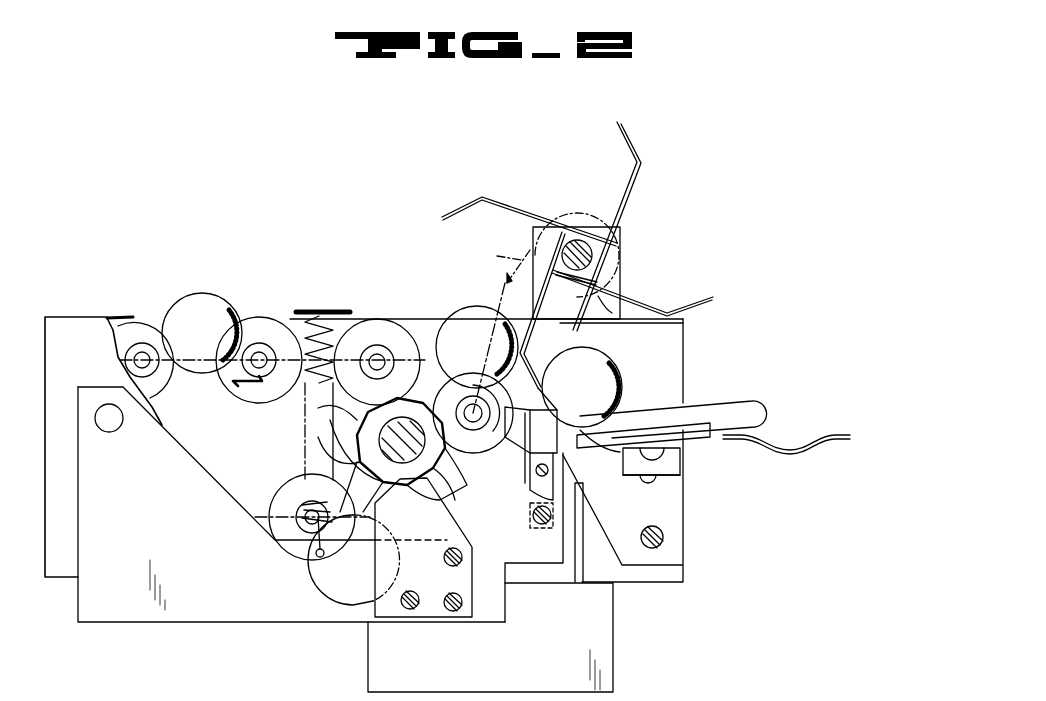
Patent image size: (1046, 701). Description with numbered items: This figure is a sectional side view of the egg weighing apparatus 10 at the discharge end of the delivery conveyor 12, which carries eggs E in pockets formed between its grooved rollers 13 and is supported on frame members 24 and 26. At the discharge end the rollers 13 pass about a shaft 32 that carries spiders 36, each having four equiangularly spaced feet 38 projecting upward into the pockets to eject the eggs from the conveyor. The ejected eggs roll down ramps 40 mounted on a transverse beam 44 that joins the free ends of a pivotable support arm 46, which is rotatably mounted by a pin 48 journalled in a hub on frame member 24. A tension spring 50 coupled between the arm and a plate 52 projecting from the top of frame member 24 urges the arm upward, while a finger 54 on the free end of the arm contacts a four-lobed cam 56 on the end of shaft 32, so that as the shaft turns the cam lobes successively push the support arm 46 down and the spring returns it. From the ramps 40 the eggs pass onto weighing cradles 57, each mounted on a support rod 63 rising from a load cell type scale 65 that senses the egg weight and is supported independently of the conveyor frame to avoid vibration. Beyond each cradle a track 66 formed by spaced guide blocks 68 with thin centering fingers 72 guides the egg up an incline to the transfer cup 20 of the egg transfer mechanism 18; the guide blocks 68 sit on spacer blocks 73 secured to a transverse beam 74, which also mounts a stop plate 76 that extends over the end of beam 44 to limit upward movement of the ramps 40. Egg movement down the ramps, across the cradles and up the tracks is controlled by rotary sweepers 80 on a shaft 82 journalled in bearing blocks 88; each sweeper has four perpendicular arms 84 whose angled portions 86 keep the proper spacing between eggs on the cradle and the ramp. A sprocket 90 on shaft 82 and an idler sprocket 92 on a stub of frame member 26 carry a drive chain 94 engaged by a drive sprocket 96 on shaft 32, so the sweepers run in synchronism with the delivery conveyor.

The egg weighing apparatus 10 is at (624, 621).
The delivery conveyor 12 is at (140, 316).
The grooved rollers 13 is at (237, 397).
The egg transfer mechanism 18 is at (822, 434).
The transfer cup 20 is at (808, 452).
The frame member 24 is at (88, 368).
The frame member 26 is at (214, 431).
The shaft 32 is at (401, 420).
The spiders 36 is at (316, 410).
The feet 38 is at (320, 437).
The ramps 40 is at (550, 407).
The transverse beam 44 is at (530, 483).
The support arm 46 is at (232, 579).
The pin 48 is at (109, 432).
The tension spring 50 is at (343, 319).
The plate 52 is at (308, 310).
The finger 54 is at (428, 608).
The four-lobed cam 56 is at (402, 472).
The weighing cradles 57 is at (590, 460).
The support rods 63 is at (575, 548).
The scales 65 is at (562, 634).
The track 66 is at (713, 400).
The guide blocks 68 is at (700, 440).
The finger 72 is at (652, 404).
The spacer blocks 73 is at (683, 450).
The transverse beam 74 is at (680, 476).
The stop plate 76 is at (686, 537).
The rotary sweepers 80 is at (628, 193).
The shaft 82 is at (592, 255).
The sweeper arms 84 is at (637, 170).
The angled portion 86 is at (545, 382).
The bearing blocks 88 is at (612, 240).
The sprocket 90 is at (606, 300).
The idler sprocket 92 is at (425, 550).
The drive chain 94 is at (537, 255).
The drive sprocket 96 is at (473, 393).
The eggs E is at (224, 312).